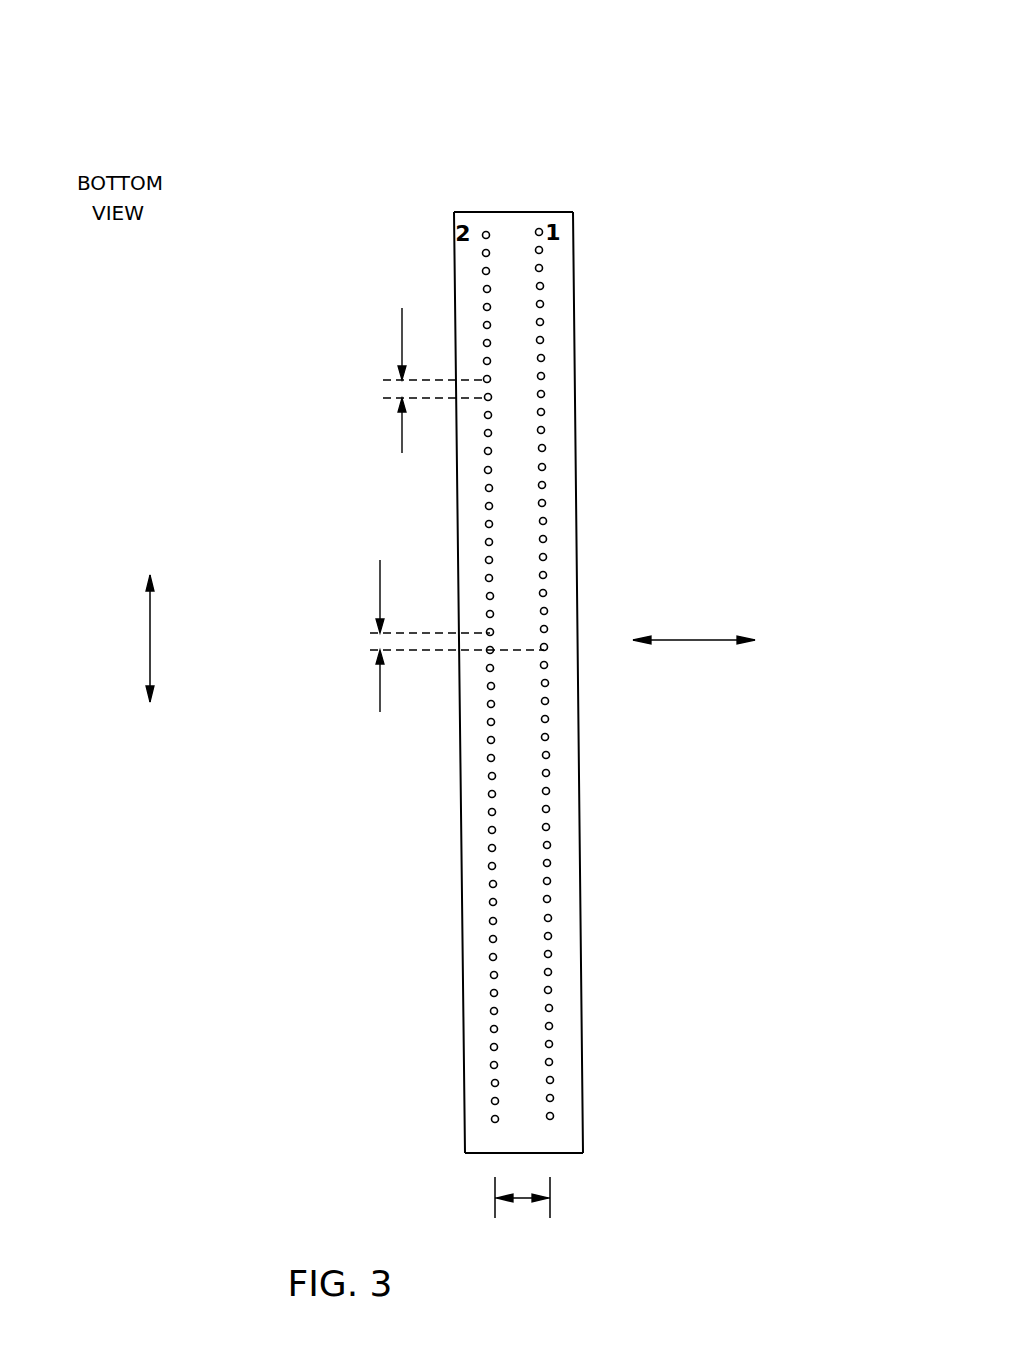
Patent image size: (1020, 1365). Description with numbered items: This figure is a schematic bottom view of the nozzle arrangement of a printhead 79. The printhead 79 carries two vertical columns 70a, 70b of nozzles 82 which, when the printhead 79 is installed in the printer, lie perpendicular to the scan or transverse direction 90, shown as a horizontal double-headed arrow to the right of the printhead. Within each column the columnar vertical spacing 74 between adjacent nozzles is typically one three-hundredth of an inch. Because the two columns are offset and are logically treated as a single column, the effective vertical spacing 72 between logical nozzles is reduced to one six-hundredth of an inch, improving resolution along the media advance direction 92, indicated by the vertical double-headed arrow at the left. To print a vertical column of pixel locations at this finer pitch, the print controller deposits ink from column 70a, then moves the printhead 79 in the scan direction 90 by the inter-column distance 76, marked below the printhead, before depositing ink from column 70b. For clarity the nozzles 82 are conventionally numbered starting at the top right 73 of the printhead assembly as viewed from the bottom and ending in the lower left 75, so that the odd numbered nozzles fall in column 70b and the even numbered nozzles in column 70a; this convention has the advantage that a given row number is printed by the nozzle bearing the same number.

The printhead 79 is at (305, 112).
The first nozzle column 70a is at (481, 200).
The second nozzle column 70b is at (536, 200).
The top right of printhead assembly 73 is at (565, 212).
The lower left of printhead assembly 75 is at (485, 1123).
The nozzles 82 is at (513, 576).
The columnar vertical spacing 74 is at (428, 380).
The effective vertical spacing 72 is at (412, 633).
The inter-column distance 76 is at (522, 1198).
The scan direction 90 is at (698, 640).
The media advance direction 92 is at (150, 630).